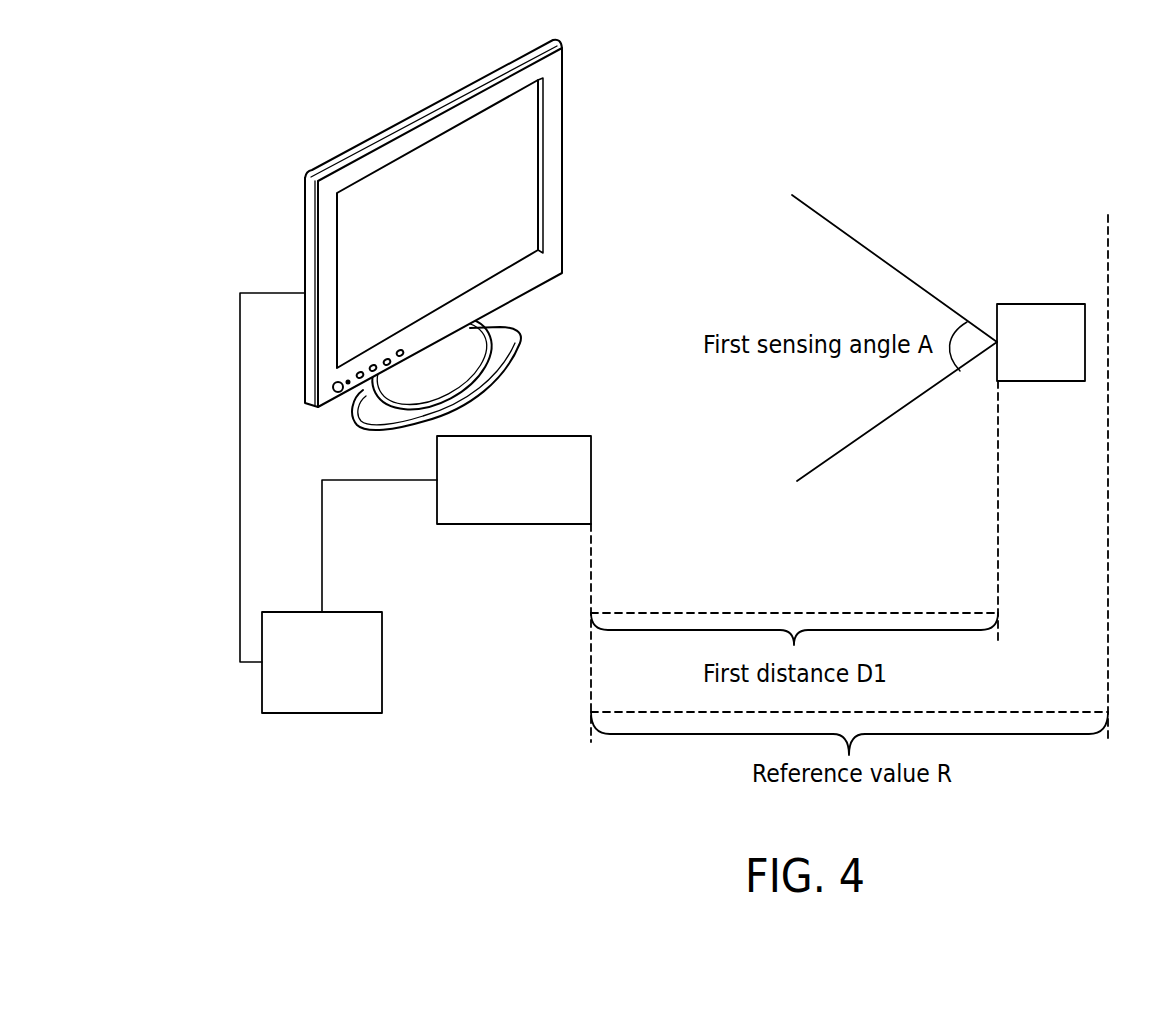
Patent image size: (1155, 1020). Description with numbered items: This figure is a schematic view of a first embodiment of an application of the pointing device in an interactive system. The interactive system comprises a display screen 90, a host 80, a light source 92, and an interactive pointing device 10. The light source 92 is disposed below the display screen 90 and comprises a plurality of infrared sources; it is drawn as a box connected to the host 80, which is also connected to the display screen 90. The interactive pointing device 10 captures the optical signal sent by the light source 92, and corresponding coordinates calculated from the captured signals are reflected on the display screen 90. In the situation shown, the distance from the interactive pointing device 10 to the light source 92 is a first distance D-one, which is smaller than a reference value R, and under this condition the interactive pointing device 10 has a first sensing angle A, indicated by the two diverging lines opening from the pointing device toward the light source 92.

The display screen 90 is at (427, 105).
The light source 92 is at (526, 510).
The host 80 is at (335, 693).
The interactive pointing device 10 is at (1055, 358).